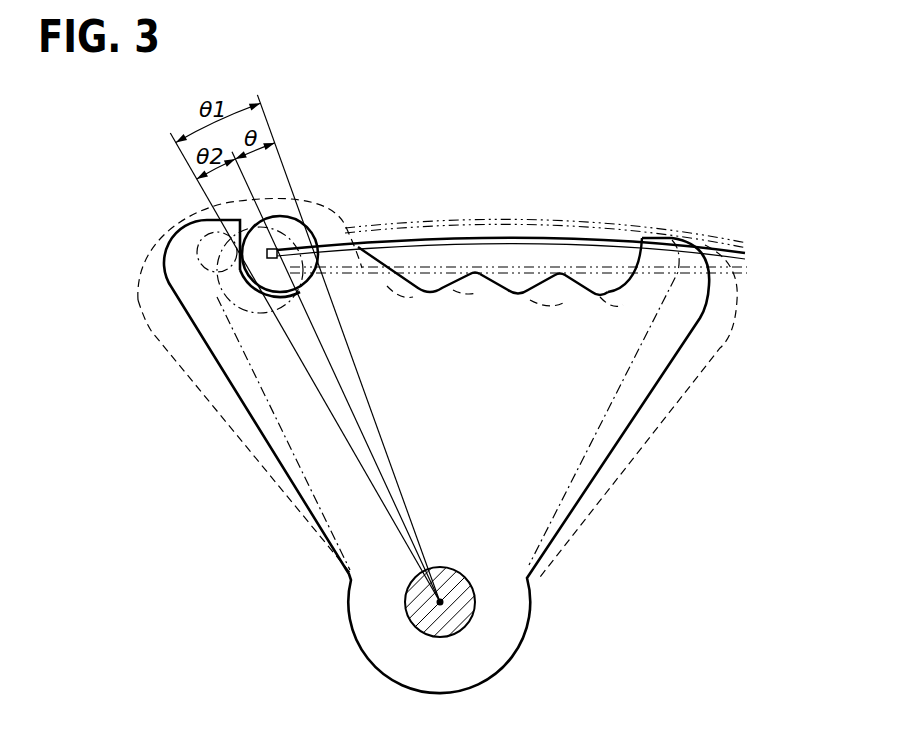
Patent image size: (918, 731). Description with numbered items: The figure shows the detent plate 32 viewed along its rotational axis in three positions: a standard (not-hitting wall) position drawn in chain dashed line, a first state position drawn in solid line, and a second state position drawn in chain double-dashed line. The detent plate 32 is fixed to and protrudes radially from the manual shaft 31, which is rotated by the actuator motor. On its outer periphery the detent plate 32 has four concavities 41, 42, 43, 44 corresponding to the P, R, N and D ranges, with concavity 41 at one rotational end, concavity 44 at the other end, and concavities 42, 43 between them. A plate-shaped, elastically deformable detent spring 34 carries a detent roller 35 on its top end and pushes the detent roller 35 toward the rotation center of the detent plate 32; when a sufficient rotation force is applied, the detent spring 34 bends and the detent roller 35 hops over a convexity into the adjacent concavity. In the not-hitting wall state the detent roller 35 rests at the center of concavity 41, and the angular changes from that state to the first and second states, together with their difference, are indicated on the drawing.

The manual shaft 31 is at (450, 602).
The detent plate 32 is at (483, 457).
The detent spring 34 is at (484, 240).
The detent roller 35 is at (290, 228).
The concavity 41 is at (262, 268).
The concavity 42 is at (433, 283).
The concavity 43 is at (518, 290).
The concavity 44 is at (600, 297).